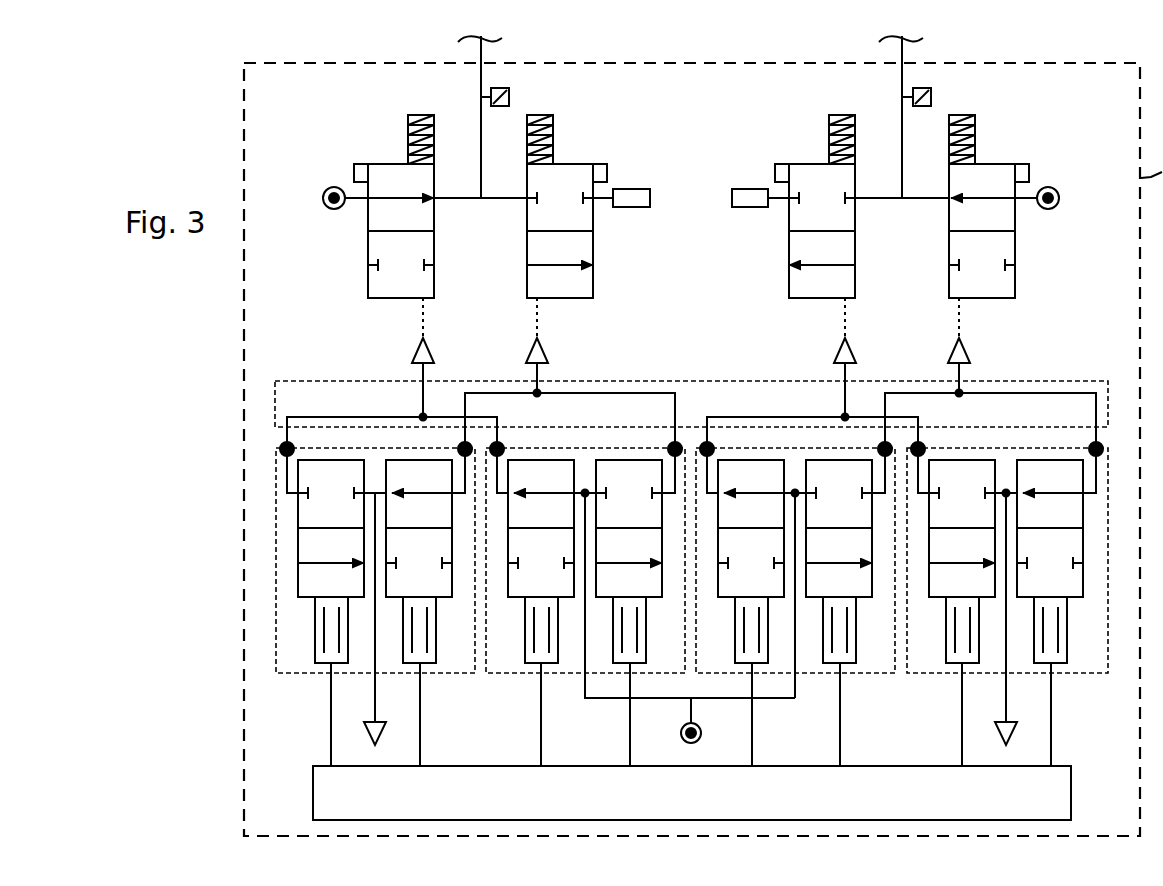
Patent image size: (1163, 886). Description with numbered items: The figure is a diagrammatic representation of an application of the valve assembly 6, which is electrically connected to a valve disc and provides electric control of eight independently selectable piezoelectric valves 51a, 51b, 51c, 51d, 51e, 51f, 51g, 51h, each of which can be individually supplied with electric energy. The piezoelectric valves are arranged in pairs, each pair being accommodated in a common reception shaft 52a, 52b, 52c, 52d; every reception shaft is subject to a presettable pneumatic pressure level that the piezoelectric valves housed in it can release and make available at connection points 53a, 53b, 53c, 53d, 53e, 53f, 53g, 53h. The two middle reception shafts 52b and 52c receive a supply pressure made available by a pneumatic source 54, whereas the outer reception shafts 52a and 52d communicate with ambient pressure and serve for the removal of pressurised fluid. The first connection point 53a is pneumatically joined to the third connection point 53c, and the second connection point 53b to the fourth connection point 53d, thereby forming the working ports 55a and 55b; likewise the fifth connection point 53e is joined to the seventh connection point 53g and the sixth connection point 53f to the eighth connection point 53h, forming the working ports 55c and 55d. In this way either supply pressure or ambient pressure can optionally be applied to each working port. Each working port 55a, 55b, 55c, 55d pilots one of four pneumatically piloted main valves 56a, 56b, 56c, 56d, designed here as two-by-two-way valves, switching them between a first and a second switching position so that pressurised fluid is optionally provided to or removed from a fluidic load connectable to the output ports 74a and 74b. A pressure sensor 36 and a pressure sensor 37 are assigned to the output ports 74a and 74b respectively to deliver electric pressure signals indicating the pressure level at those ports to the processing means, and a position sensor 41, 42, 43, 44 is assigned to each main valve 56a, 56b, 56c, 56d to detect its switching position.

The valve assembly 6 is at (1058, 790).
The pressure sensor 36 is at (510, 97).
The pressure sensor 37 is at (932, 97).
The position sensor 41 is at (358, 164).
The position sensor 42 is at (602, 164).
The position sensor 43 is at (781, 164).
The position sensor 44 is at (1024, 164).
The piezoelectric valve 51a is at (318, 659).
The piezoelectric valve 51b is at (434, 659).
The piezoelectric valve 51c is at (528, 659).
The piezoelectric valve 51d is at (616, 659).
The piezoelectric valve 51e is at (739, 659).
The piezoelectric valve 51f is at (853, 659).
The piezoelectric valve 51g is at (949, 659).
The piezoelectric valve 51h is at (1065, 659).
The reception shaft 52a is at (376, 458).
The reception shaft 52b is at (585, 458).
The reception shaft 52c is at (795, 458).
The reception shaft 52d is at (1006, 458).
The first connection point 53a is at (287, 442).
The second connection point 53b is at (465, 442).
The third connection point 53c is at (497, 442).
The fourth connection point 53d is at (675, 442).
The fifth connection point 53e is at (707, 442).
The sixth connection point 53f is at (885, 442).
The seventh connection point 53g is at (918, 442).
The eighth connection point 53h is at (1096, 442).
The pneumatic source 54 is at (681, 733).
The working port 55a is at (420, 416).
The working port 55b is at (539, 392).
The working port 55c is at (843, 416).
The working port 55d is at (961, 392).
The main valve 56a is at (350, 248).
The main valve 56b is at (510, 248).
The main valve 56c is at (772, 248).
The main valve 56d is at (932, 248).
The output port 74a is at (480, 113).
The output port 74b is at (901, 113).